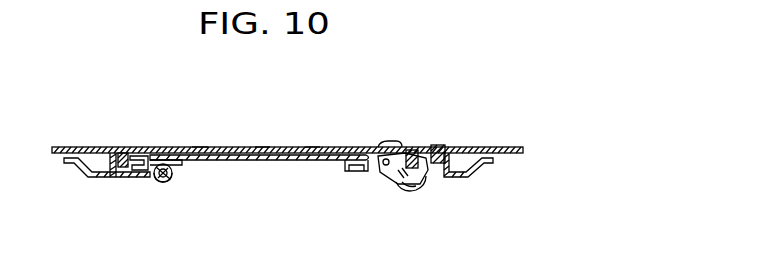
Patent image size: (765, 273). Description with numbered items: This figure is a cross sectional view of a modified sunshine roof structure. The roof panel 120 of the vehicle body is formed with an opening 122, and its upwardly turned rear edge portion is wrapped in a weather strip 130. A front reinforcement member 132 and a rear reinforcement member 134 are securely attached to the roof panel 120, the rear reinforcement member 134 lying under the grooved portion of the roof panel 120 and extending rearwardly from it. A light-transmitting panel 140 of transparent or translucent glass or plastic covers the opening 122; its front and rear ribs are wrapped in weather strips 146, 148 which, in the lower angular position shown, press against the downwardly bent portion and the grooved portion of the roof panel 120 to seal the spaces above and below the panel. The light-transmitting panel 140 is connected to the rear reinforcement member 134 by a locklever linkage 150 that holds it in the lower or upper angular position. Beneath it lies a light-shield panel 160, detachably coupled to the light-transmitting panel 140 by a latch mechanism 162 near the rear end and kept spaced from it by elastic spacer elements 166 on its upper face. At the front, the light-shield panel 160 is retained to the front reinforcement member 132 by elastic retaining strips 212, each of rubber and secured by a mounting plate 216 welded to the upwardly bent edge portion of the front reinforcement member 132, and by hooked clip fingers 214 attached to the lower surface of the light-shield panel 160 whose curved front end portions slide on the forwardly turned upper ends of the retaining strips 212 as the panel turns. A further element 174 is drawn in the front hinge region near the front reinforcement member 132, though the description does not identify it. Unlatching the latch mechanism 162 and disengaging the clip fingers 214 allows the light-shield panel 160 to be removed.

The roof panel 120 is at (53, 146).
The opening 122 is at (261, 146).
The weather strip 130 is at (415, 146).
The front reinforcement member 132 is at (95, 177).
The rear reinforcement member 134 is at (466, 178).
The light-transmitting panel 140 is at (313, 147).
The weather strip 146 is at (120, 151).
The weather strip 148 is at (441, 147).
The locklever linkage 150 is at (418, 188).
The light-shield panel 160 is at (282, 161).
The latch mechanism 162 is at (355, 173).
The elastic spacer element 166 is at (202, 150).
The hinge channel 174 is at (135, 170).
The elastic retaining strip 212 is at (175, 172).
The hooked clip finger 214 is at (182, 163).
The mounting plate 216 is at (163, 183).